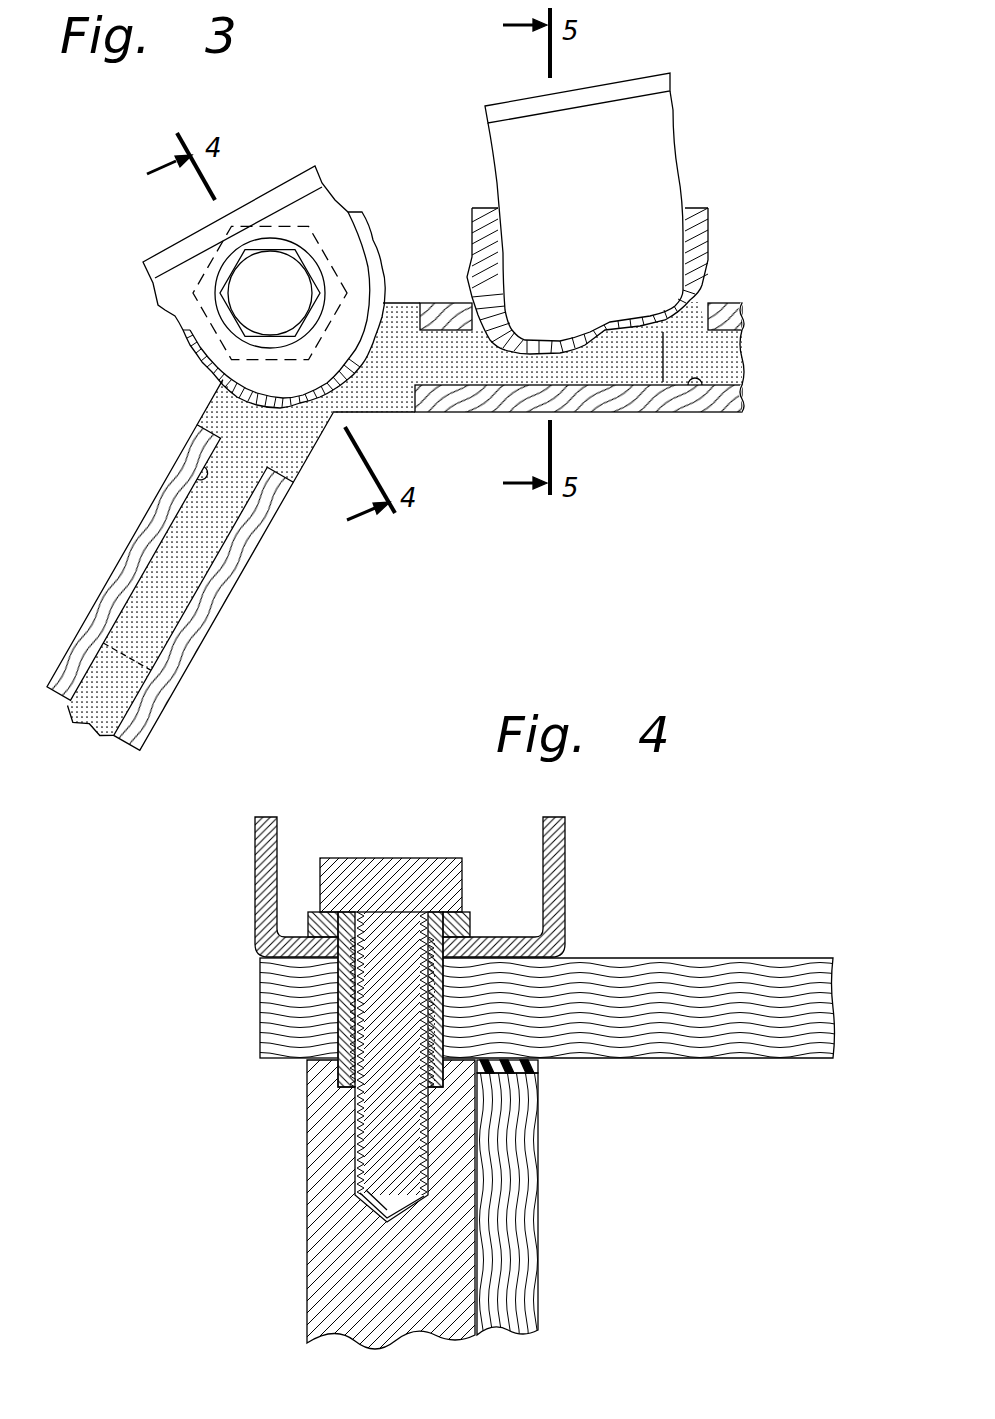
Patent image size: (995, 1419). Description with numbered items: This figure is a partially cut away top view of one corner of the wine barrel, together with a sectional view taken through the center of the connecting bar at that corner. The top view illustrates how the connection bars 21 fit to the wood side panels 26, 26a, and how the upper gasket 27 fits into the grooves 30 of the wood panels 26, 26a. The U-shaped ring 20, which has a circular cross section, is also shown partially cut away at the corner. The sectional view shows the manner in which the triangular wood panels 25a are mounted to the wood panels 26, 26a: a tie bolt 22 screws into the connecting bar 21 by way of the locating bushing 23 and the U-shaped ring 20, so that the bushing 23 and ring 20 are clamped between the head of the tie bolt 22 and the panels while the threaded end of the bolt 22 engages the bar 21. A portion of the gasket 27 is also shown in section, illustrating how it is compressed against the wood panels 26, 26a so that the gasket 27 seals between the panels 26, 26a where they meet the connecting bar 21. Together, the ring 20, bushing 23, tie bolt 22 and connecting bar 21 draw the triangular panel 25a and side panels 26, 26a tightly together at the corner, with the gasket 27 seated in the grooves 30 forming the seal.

In FIG. 3, the U-shaped ring 20 is at (285, 186).
In FIG. 4, the U-shaped ring 20 is at (570, 850).
In FIG. 3, the connection bar 21 is at (213, 268).
In FIG. 4, the connection bar 21 is at (307, 1215).
In FIG. 3, the tie bolt 22 is at (283, 280).
In FIG. 4, the tie bolt 22 is at (385, 858).
In FIG. 3, the locating bushing 23 is at (217, 320).
In FIG. 4, the locating bushing 23 is at (476, 927).
In FIG. 4, the triangular wood panel 25a is at (268, 1013).
In FIG. 3, the wood side panel 26 is at (117, 565).
In FIG. 4, the wood side panel 26 is at (532, 1198).
In FIG. 3, the wood side panel 26a is at (117, 750).
In FIG. 3, the upper gasket 27 is at (383, 405).
In FIG. 4, the upper gasket 27 is at (538, 1068).
In FIG. 3, the groove 30 is at (205, 476).